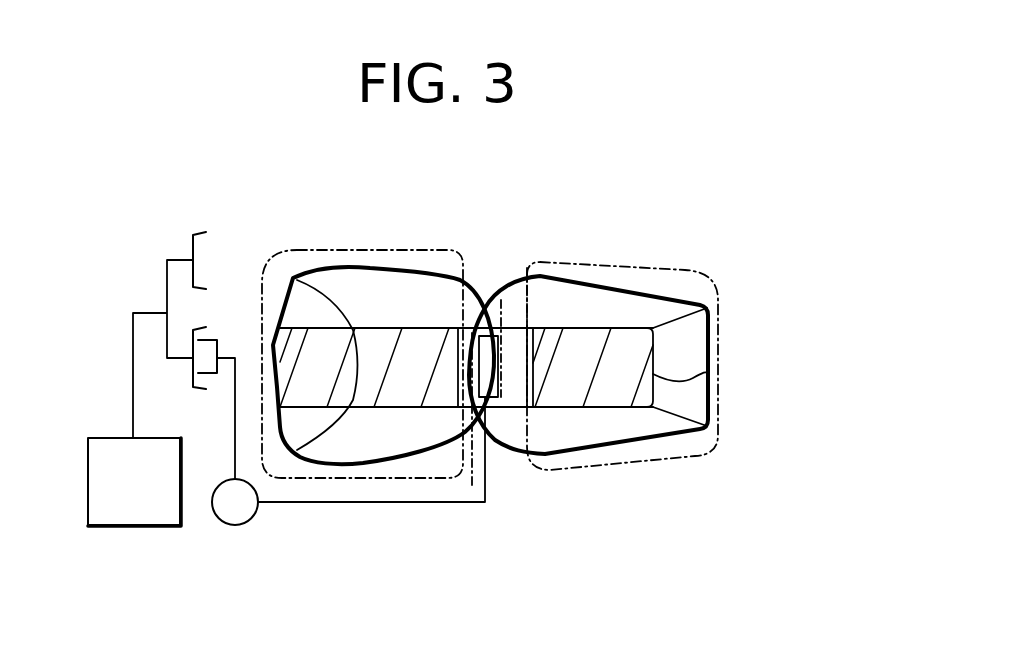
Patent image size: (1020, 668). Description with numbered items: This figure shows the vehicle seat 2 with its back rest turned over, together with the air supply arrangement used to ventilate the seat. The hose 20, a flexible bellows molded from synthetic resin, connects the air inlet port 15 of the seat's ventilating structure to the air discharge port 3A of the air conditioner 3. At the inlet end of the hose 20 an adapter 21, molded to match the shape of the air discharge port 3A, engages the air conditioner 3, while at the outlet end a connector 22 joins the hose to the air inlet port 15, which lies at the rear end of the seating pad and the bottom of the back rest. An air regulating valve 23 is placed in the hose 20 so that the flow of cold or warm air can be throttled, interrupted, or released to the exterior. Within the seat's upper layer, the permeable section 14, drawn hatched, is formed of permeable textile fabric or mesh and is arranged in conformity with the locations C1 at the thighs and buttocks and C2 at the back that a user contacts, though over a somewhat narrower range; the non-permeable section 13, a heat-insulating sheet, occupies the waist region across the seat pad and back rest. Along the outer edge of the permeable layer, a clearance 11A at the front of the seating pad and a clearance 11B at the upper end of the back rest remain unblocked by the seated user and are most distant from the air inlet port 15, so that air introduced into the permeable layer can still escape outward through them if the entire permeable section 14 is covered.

The vehicle seat 2 is at (720, 316).
The air conditioner 3 is at (182, 468).
The air discharge port 3A is at (193, 362).
The clearance 11A is at (277, 347).
The clearance 11B is at (710, 376).
The non-permeable section 13 is at (472, 333).
The permeable section 14 is at (330, 333).
The air inlet port 15 is at (498, 385).
The hose 20 is at (490, 425).
The adapter 21 is at (218, 343).
The connector 22 is at (472, 504).
The air regulating valve 23 is at (218, 521).
The contacted location (thigh and buttocks) C1 is at (391, 250).
The contacted location (back) C2 is at (630, 262).